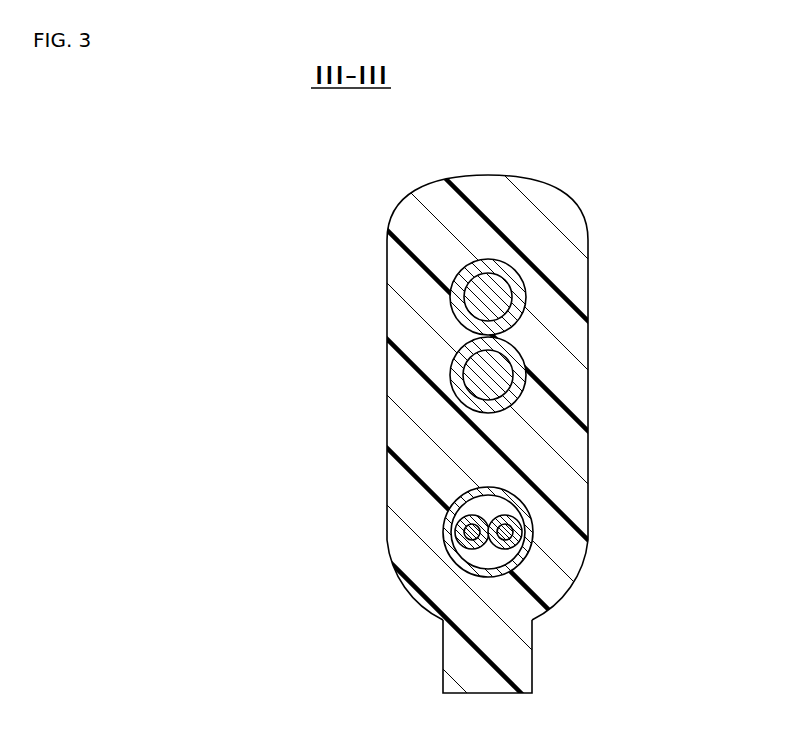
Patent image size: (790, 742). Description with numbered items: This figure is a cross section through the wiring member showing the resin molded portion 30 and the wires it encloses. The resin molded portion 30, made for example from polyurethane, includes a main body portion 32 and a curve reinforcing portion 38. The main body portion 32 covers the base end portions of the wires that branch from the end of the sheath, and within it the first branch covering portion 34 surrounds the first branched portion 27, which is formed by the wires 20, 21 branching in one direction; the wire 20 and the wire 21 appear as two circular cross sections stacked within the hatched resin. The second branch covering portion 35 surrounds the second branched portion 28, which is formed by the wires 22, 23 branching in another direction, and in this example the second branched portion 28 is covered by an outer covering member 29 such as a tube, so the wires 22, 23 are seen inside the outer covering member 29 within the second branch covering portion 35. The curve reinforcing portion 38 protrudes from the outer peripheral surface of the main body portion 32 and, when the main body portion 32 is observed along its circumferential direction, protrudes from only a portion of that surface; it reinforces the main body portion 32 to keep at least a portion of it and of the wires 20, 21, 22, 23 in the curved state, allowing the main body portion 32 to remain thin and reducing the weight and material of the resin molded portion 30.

The resin molded portion 30 is at (552, 168).
The first branch covering portion 34 is at (588, 253).
The main body portion 32 is at (588, 420).
The second branch covering portion 35 is at (585, 554).
The curve reinforcing portion 38 is at (532, 663).
The wire 20 is at (450, 298).
The first branched portion 27 is at (518, 322).
The wire 21 is at (452, 374).
The second branched portion 28 is at (528, 514).
The outer covering member 29 is at (448, 517).
The wire 22 is at (470, 551).
The wire 23 is at (507, 551).